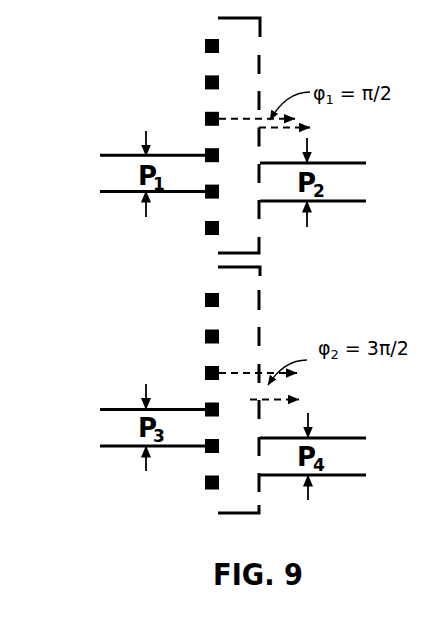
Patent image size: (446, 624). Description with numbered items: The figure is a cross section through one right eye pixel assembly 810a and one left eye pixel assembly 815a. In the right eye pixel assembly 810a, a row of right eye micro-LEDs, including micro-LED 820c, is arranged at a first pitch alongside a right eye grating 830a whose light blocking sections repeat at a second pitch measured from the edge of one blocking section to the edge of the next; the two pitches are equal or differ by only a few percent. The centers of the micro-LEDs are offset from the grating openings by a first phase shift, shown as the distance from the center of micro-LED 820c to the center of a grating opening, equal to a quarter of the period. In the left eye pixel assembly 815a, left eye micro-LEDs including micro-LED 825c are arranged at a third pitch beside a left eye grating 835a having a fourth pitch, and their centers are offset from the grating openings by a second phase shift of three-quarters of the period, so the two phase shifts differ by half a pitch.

The right eye pixel assembly 810a is at (152, 55).
The right eye micro-LED 820c is at (203, 117).
The right eye grating 830a is at (273, 53).
The left eye pixel assembly 815a is at (150, 300).
The left eye micro-LED 825c is at (203, 370).
The left eye grating 835a is at (277, 296).